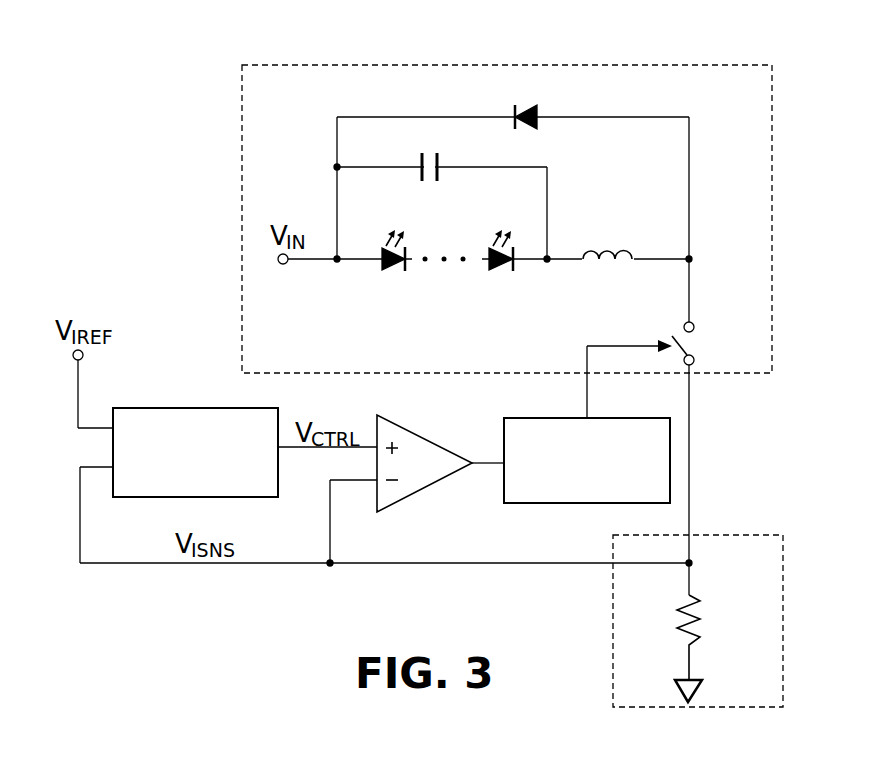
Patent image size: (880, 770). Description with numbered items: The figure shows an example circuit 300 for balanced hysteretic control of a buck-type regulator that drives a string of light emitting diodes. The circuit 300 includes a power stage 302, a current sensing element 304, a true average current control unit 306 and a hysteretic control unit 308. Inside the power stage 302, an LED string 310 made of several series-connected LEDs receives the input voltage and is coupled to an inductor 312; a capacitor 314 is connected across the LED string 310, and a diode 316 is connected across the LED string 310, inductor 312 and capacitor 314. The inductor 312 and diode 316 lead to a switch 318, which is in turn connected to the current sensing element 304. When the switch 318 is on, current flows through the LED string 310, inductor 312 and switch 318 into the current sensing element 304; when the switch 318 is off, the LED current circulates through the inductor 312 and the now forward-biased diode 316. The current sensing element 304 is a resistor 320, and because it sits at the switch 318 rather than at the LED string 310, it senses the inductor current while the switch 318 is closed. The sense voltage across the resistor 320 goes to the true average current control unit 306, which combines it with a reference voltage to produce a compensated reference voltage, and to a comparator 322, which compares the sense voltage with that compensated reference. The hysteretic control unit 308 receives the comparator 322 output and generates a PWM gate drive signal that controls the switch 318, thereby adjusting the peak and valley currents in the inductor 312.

The circuit 300 is at (116, 75).
The power stage 302 is at (648, 65).
The current sensing element 304 is at (728, 535).
The true average current control unit 306 is at (165, 408).
The hysteretic control unit 308 is at (575, 503).
The LED string 310 is at (420, 293).
The inductor 312 is at (612, 248).
The capacitor 314 is at (418, 160).
The diode 316 is at (512, 108).
The switch 318 is at (683, 343).
The resistor 320 is at (702, 615).
The comparator 322 is at (428, 440).